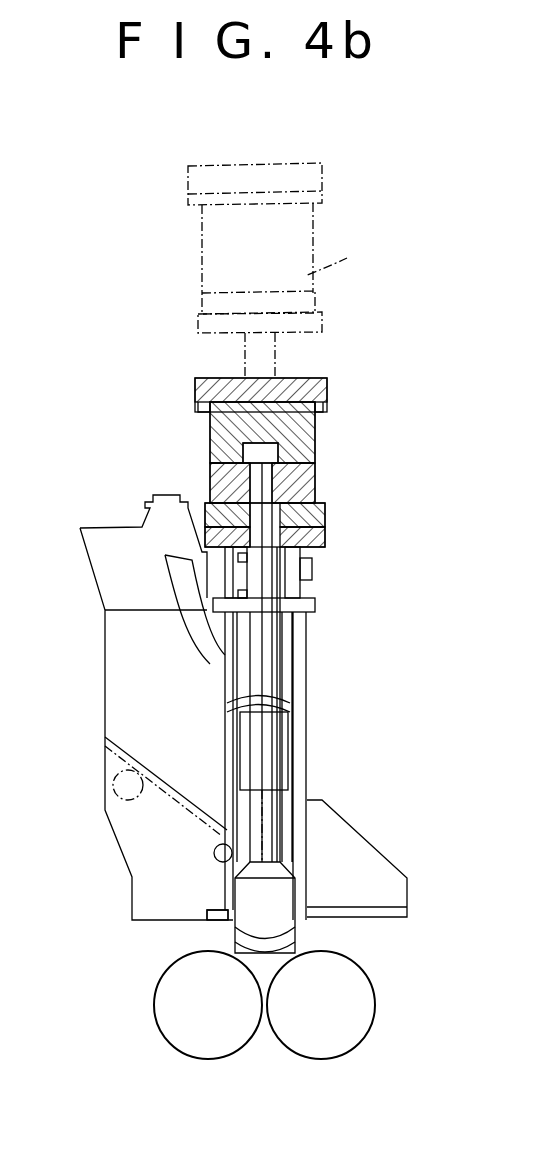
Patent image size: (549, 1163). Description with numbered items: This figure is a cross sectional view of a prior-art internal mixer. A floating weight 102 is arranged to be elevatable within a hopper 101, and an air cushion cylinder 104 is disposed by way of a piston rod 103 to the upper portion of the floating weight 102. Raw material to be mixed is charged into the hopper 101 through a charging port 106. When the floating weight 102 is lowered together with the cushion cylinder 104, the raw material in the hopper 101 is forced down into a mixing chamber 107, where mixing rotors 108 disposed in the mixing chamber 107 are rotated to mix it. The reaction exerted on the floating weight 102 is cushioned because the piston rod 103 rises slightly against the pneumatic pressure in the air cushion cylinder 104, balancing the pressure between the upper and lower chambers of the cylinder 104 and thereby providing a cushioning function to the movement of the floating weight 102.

The hopper 101 is at (223, 888).
The floating weight 102 is at (287, 923).
The piston rod 103 is at (257, 822).
The air cushion cylinder 104 is at (305, 481).
The charging port 106 is at (182, 720).
The mixing chamber 107 is at (265, 1038).
The mixing rotors 108 is at (185, 1030).